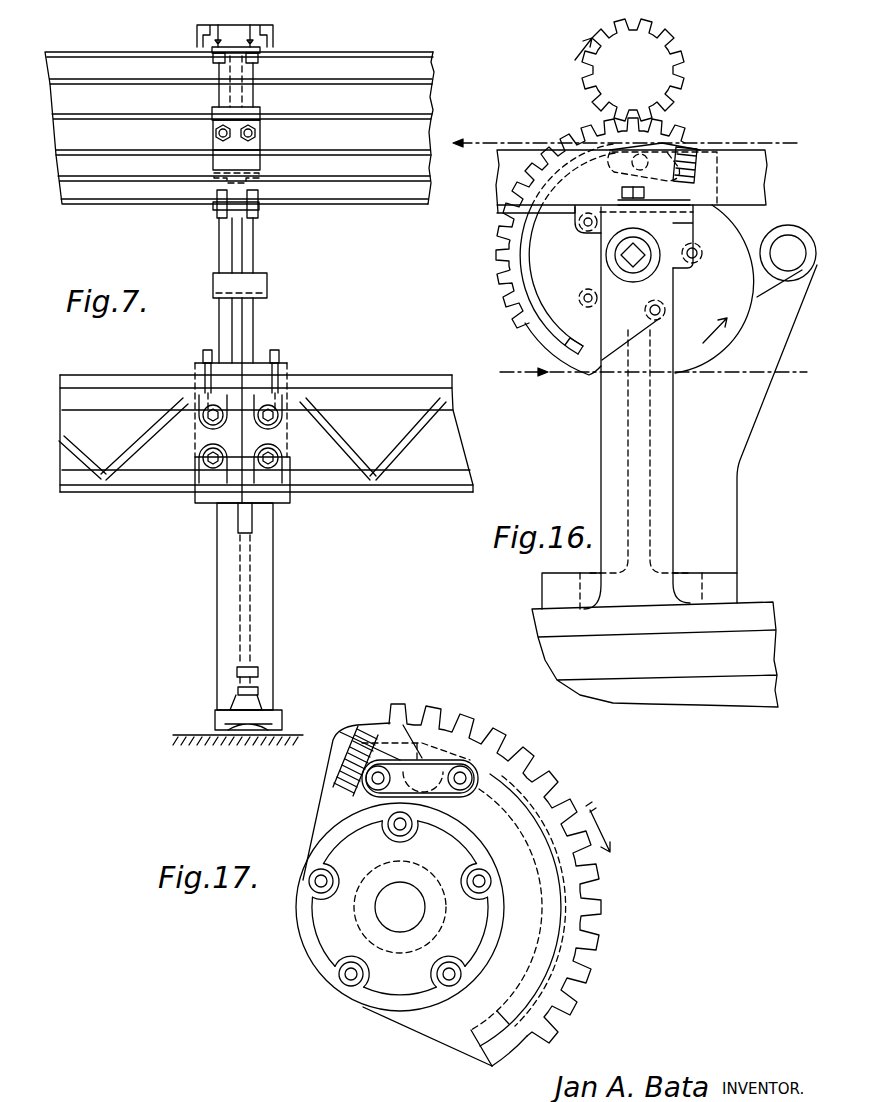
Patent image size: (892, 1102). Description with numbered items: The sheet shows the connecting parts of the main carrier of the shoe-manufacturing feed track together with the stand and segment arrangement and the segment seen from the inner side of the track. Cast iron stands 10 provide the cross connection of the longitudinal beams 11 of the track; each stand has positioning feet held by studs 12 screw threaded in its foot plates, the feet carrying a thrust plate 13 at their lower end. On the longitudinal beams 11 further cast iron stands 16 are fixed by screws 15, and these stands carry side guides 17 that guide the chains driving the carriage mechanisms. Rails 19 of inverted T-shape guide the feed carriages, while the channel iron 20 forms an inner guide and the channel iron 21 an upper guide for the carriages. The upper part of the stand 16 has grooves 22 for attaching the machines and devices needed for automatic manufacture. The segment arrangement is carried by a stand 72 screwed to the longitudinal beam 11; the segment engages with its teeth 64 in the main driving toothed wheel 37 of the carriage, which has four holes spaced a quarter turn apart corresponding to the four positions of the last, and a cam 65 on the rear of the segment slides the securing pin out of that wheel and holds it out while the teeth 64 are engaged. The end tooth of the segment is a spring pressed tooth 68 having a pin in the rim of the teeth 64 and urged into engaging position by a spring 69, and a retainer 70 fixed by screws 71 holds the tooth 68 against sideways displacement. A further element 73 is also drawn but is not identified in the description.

In FIG. 7, the cast iron stand 10 is at (262, 584).
In FIG. 7, the longitudinal beam 11 is at (367, 387).
In FIG. 7, the stud 12 is at (258, 672).
In FIG. 7, the thrust plate 13 is at (283, 722).
In FIG. 7, the screw 15 is at (278, 355).
In FIG. 7, the cast iron stand 16 is at (253, 322).
In FIG. 7, the side guide 17 is at (268, 283).
In FIG. 7, the rail 19 is at (172, 192).
In FIG. 7, the channel iron 20 is at (350, 133).
In FIG. 7, the channel iron 21 is at (356, 62).
In FIG. 7, the groove 22 is at (262, 26).
In FIG. 16, the main driving toothed wheel 37 is at (678, 80).
In FIG. 16, the teeth of the segment 64 is at (518, 313).
In FIG. 17, the teeth of the segment 64 is at (570, 1010).
In FIG. 16, the cam 65 is at (572, 345).
In FIG. 17, the cam 65 is at (467, 1047).
In FIG. 16, the spring pressed tooth 68 is at (653, 137).
In FIG. 17, the spring pressed tooth 68 is at (398, 712).
In FIG. 17, the spring 69 is at (338, 745).
In FIG. 17, the retainer 70 is at (420, 760).
In FIG. 17, the screw 71 is at (467, 772).
In FIG. 16, the stand 72 is at (723, 503).
In FIG. 16, the pulley 73 is at (795, 258).